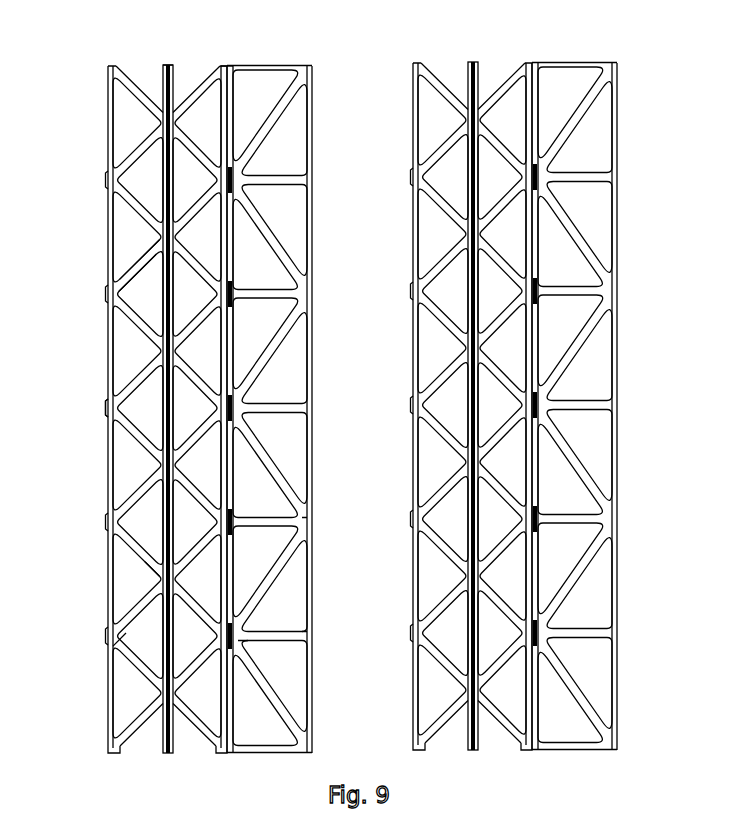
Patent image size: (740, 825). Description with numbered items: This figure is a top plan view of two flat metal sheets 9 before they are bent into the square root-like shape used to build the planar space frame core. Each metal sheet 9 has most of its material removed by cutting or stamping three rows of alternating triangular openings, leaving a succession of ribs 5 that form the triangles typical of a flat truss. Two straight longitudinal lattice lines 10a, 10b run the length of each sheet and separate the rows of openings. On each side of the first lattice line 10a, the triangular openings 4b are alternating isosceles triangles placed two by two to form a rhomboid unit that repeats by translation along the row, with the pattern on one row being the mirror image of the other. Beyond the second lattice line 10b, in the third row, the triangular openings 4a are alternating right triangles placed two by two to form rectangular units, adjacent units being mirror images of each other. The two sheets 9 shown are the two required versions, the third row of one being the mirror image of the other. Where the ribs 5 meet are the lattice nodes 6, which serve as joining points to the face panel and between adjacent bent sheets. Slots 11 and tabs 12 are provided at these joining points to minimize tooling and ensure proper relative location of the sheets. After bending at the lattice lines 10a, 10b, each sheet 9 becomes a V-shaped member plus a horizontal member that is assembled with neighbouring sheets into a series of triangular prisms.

The metal sheet 9 is at (75, 128).
The triangular openings 4a is at (290, 365).
The triangular openings 4b is at (133, 352).
The ribs 5 is at (138, 262).
The lattice nodes 6 is at (142, 576).
The first lattice line 10a is at (167, 18).
The second lattice line 10b is at (227, 18).
The slots 11 is at (237, 410).
The tabs 12 is at (107, 410).